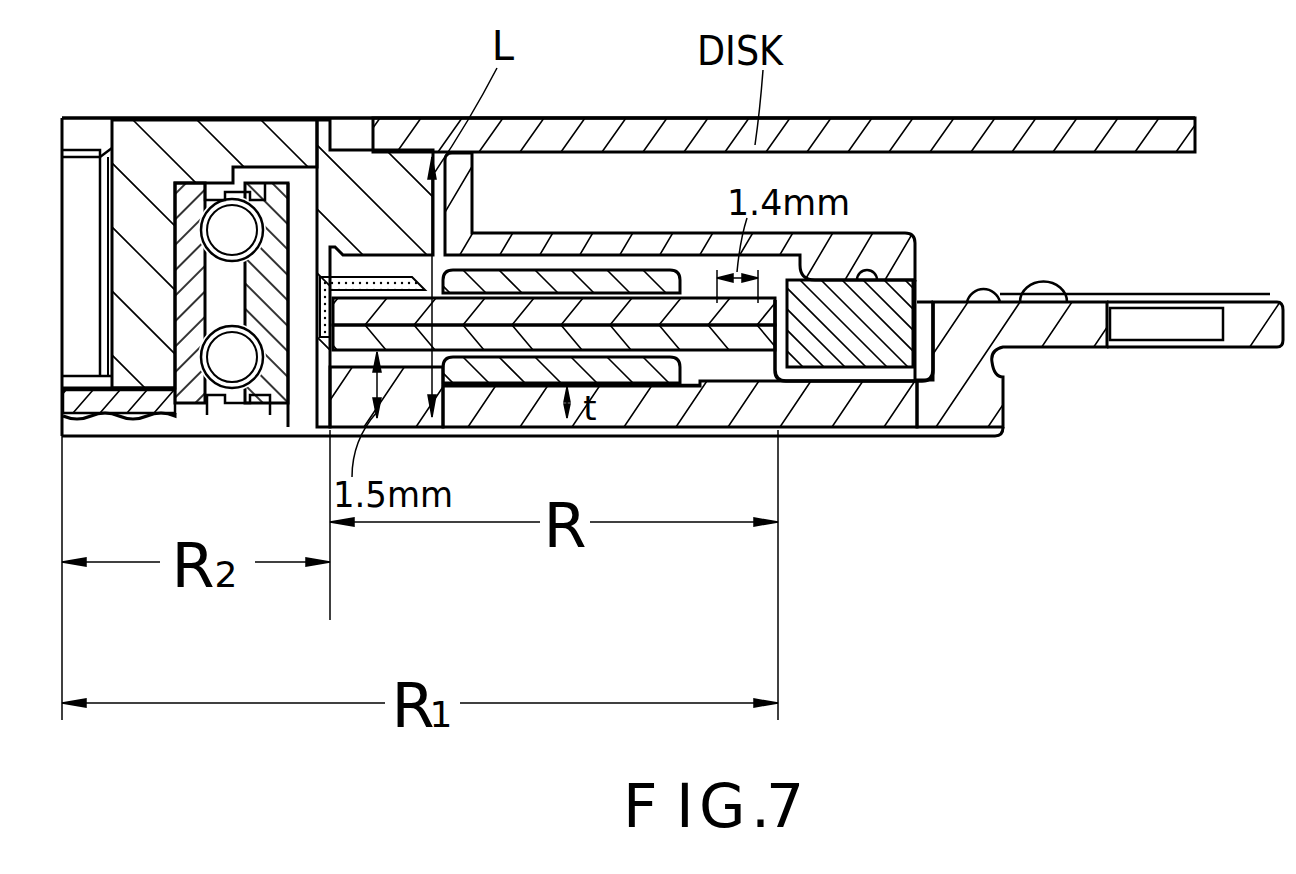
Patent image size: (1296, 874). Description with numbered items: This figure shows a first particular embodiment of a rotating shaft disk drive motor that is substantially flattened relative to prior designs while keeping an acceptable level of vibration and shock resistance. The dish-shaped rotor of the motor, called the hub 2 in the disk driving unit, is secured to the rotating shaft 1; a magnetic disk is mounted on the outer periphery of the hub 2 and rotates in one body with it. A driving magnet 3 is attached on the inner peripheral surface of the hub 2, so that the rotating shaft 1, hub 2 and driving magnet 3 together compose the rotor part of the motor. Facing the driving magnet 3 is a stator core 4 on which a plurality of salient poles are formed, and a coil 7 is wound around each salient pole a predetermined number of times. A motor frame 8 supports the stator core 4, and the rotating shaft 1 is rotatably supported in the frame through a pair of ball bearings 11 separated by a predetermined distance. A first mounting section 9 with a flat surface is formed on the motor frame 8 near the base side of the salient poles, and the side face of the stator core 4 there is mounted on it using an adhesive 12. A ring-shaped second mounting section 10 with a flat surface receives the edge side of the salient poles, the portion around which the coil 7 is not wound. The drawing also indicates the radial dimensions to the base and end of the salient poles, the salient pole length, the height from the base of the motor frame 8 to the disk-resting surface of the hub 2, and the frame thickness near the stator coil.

The rotating shaft 1 is at (142, 190).
The hub 2 is at (215, 118).
The driving magnet 3 is at (827, 337).
The stator core 4 is at (560, 312).
The coil 7 is at (652, 310).
The motor frame 8 is at (967, 385).
The first mounting section 9 is at (400, 373).
The second mounting section 10 is at (737, 385).
The ball bearings 11 is at (232, 227).
The adhesive 12 is at (327, 287).